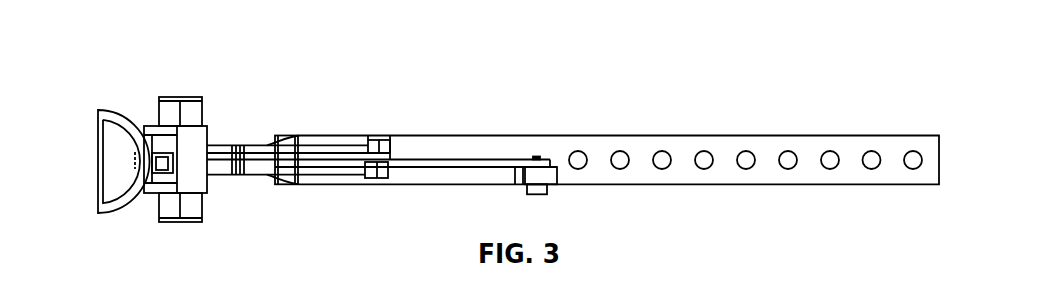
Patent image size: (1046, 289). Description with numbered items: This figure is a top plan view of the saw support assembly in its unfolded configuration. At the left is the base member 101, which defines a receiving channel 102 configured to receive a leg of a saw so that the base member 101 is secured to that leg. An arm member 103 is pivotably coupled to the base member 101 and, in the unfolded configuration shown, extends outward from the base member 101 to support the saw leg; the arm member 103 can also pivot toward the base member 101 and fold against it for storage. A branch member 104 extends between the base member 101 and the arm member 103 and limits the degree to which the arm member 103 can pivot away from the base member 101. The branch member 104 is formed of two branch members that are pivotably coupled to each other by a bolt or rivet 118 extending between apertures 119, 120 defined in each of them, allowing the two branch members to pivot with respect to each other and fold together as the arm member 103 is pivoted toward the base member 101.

The base member 101 is at (105, 112).
The receiving channel 102 is at (90, 168).
The arm member 103 is at (885, 136).
The branch member 104 is at (408, 134).
The bolt or rivet 118 is at (375, 136).
The aperture 119 is at (356, 134).
The aperture 120 is at (362, 188).